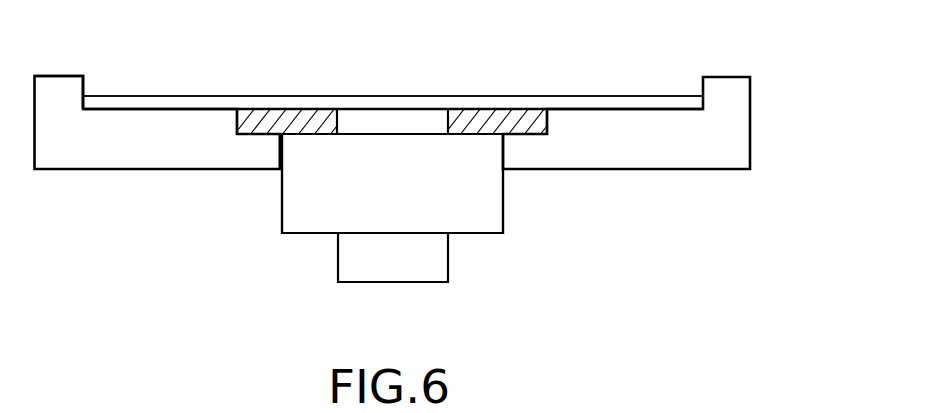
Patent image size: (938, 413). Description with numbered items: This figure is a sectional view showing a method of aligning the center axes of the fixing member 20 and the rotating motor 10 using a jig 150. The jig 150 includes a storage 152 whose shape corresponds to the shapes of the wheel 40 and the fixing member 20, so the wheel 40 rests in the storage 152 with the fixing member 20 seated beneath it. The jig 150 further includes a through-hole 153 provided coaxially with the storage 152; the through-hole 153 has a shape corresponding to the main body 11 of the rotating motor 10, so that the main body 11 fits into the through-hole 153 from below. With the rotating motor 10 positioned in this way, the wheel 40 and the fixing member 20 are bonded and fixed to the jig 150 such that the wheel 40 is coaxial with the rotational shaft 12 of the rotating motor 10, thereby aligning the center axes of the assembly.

The rotating motor 10 is at (506, 207).
The main body 11 is at (297, 208).
The rotational shaft 12 is at (392, 120).
The fixing member 20 is at (505, 120).
The wheel 40 is at (637, 102).
The jig 150 is at (743, 138).
The storage 152 is at (83, 85).
The through-hole 153 is at (282, 156).